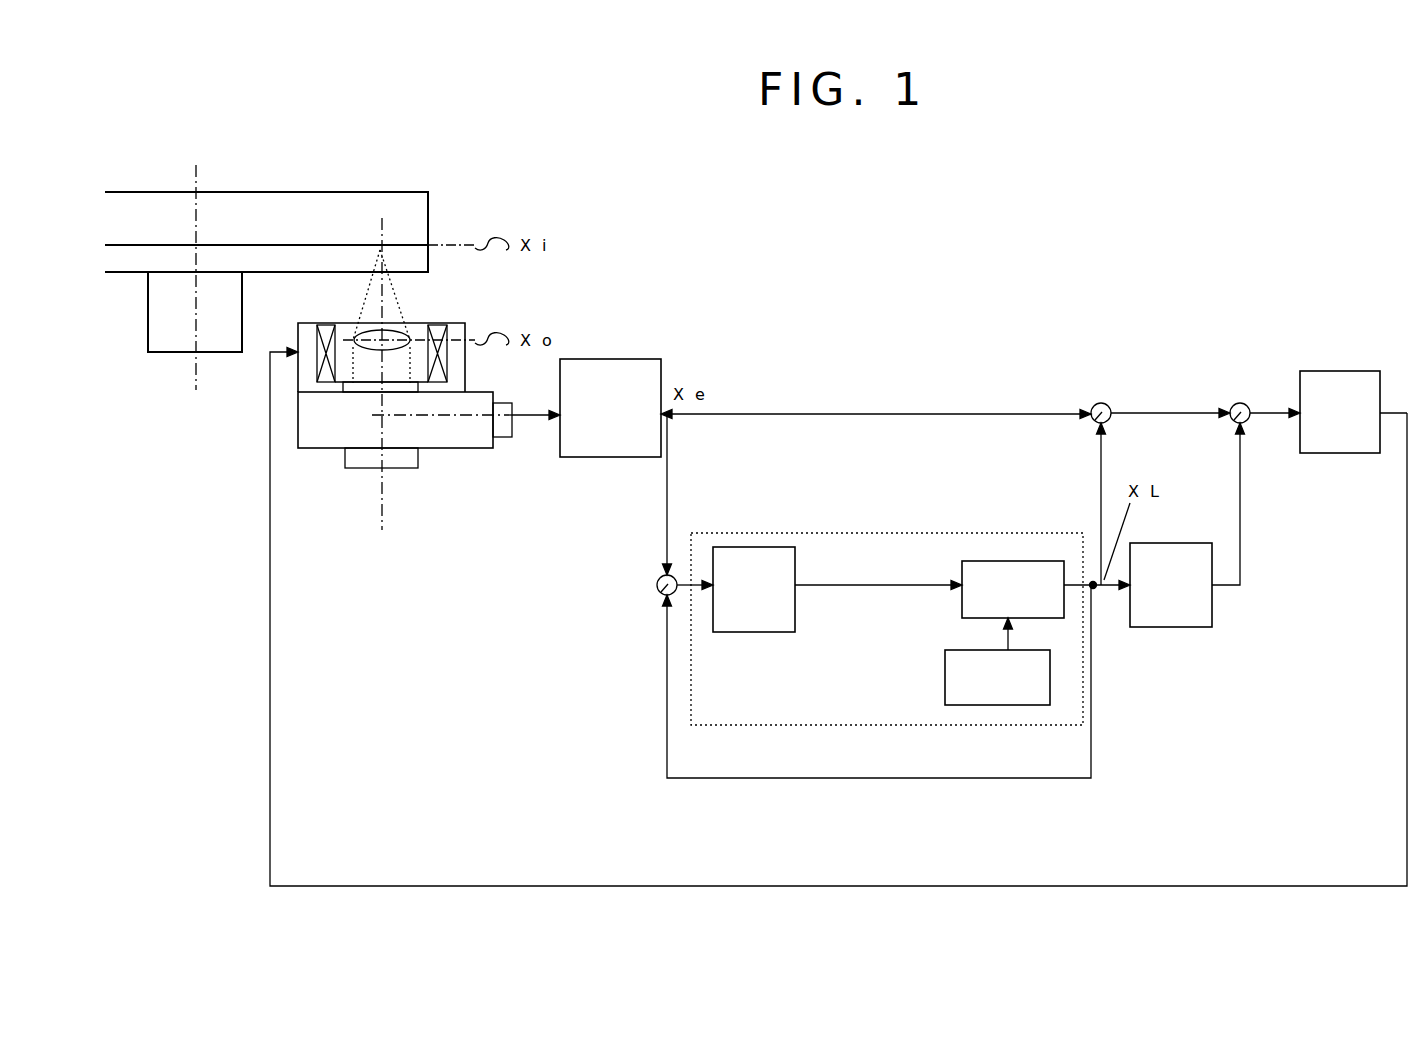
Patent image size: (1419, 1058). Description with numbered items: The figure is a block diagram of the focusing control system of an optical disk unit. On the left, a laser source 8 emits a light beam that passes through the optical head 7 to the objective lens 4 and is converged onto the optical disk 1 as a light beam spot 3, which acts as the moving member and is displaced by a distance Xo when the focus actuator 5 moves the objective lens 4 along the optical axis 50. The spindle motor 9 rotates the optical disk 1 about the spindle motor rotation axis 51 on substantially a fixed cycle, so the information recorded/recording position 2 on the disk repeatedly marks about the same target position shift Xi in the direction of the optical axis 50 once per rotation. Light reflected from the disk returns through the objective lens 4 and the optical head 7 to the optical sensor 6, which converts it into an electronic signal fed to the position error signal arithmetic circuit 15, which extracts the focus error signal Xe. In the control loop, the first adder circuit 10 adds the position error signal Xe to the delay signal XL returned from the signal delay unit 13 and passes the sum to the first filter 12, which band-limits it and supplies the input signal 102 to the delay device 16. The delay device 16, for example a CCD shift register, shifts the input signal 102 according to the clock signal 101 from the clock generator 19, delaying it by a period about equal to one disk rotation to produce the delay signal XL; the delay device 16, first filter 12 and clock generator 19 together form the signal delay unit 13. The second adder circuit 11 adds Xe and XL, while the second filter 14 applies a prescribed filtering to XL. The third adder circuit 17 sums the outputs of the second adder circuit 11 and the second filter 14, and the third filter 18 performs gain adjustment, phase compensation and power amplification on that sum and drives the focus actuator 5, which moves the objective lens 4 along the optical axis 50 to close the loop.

The optical disk 1 is at (430, 216).
The information recorded/recording position 2 is at (289, 243).
The light beam spot 3 is at (381, 250).
The objective lens 4 is at (369, 333).
The focus actuator 5 is at (325, 342).
The optical sensor 6 is at (508, 403).
The optical head 7 is at (333, 437).
The laser source 8 is at (353, 460).
The spindle motor 9 is at (157, 320).
The optical axis 50 is at (382, 480).
The spindle motor rotation axis 51 is at (196, 393).
The position error signal arithmetic circuit 15 is at (566, 460).
The first adder circuit 10 is at (661, 588).
The first filter 12 is at (795, 628).
The signal delay unit 13 is at (972, 533).
The delay device 16 is at (1037, 560).
The clock generator 19 is at (1050, 680).
The clock signal 101 is at (1007, 643).
The input signal 102 is at (884, 586).
The second adder circuit 11 is at (1094, 419).
The second filter 14 is at (1208, 630).
The third adder circuit 17 is at (1234, 419).
The third filter 18 is at (1351, 456).